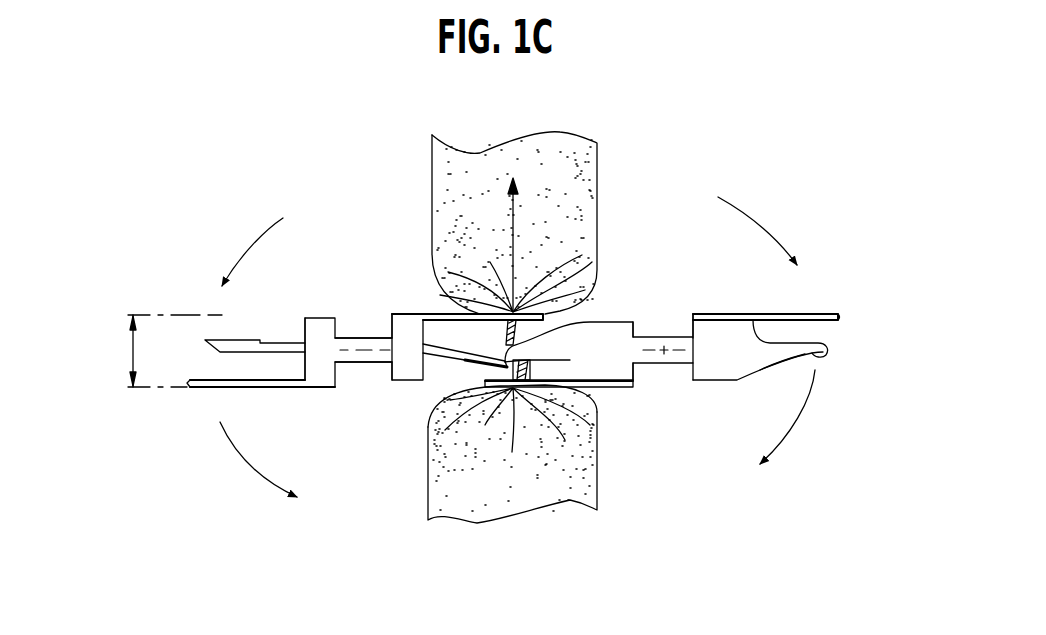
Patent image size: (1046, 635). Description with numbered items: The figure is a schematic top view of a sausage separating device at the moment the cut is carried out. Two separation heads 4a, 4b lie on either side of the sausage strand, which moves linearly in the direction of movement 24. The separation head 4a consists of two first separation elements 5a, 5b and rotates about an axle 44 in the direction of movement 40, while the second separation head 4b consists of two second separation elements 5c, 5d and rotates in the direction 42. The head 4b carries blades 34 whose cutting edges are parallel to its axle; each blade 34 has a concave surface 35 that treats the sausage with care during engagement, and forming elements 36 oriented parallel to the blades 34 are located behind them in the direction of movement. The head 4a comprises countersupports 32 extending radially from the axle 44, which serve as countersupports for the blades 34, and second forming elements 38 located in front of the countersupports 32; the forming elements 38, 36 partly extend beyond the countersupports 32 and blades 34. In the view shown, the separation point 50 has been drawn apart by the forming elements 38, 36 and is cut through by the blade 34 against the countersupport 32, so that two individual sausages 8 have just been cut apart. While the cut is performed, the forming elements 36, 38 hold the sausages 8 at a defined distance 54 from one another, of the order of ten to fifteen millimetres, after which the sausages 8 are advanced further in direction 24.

The separation head 4a is at (340, 230).
The second separation head 4b is at (663, 170).
The first separation element 5a is at (308, 300).
The first separation element 5b is at (385, 312).
The second separation element 5c is at (604, 302).
The second separation element 5d is at (720, 417).
The sausage 8 is at (567, 157).
The direction of movement 24 is at (512, 231).
The countersupport 32 is at (235, 343).
The blade 34 is at (820, 356).
The concave surface 35 is at (773, 372).
The forming element 36 is at (810, 314).
The second forming element 38 is at (419, 314).
The direction of movement 40 is at (250, 242).
The direction 42 is at (770, 222).
The axle 44 is at (366, 342).
The separation point 50 is at (513, 372).
The distance 54 is at (130, 358).